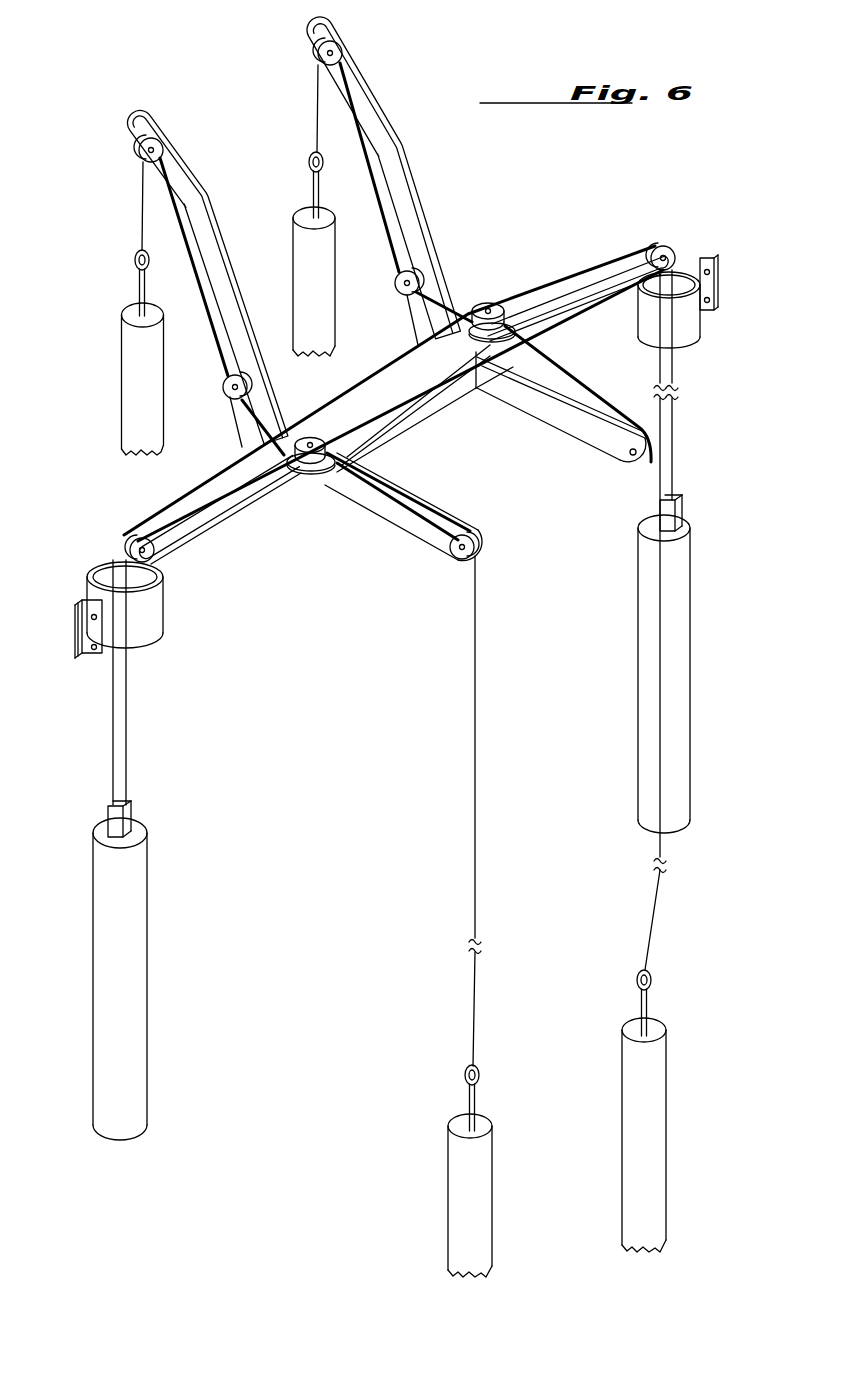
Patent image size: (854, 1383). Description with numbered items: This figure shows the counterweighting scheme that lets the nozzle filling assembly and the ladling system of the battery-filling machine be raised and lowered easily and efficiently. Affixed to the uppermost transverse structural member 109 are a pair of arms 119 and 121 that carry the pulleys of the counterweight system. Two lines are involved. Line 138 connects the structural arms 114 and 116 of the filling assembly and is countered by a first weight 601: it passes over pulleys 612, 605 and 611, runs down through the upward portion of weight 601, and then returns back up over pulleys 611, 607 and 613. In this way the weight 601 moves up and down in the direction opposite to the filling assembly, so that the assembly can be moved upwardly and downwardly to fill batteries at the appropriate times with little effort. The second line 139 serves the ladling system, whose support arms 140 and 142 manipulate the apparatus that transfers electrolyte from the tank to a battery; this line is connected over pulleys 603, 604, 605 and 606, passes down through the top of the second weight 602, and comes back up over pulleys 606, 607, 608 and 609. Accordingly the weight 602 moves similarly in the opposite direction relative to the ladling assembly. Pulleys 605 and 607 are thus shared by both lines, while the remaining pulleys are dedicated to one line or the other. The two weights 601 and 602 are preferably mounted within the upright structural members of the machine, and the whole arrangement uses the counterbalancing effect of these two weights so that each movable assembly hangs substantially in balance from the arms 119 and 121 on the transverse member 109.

The uppermost transverse structural member 109 is at (306, 483).
The structural arm of the filling assembly 114 is at (460, 1155).
The structural arm of the filling assembly 116 is at (637, 1115).
The arm 119 is at (380, 505).
The arm 121 is at (540, 420).
The line 138 is at (472, 796).
The line 139 is at (317, 105).
The support arm 140 is at (128, 348).
The support arm 142 is at (297, 247).
The weight 601 is at (135, 990).
The weight 602 is at (685, 630).
The pulley 603 is at (140, 149).
The pulley 604 is at (227, 384).
The pulley 605 is at (310, 472).
The pulley 606 is at (668, 250).
The pulley 607 is at (492, 305).
The pulley 608 is at (403, 285).
The pulley 609 is at (318, 48).
The pulley 611 is at (128, 540).
The pulley 612 is at (458, 560).
The pulley 613 is at (648, 430).